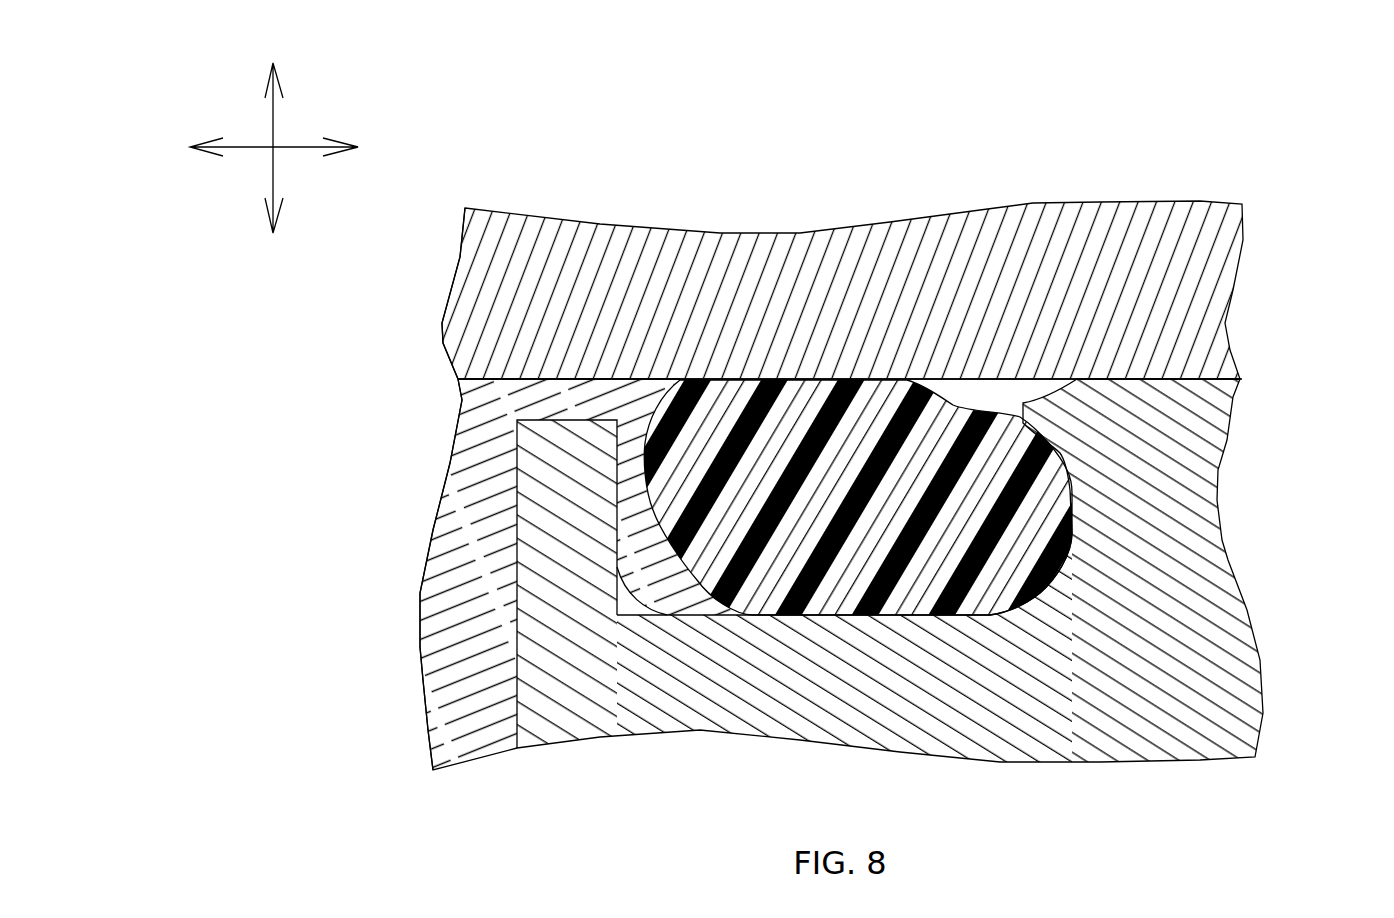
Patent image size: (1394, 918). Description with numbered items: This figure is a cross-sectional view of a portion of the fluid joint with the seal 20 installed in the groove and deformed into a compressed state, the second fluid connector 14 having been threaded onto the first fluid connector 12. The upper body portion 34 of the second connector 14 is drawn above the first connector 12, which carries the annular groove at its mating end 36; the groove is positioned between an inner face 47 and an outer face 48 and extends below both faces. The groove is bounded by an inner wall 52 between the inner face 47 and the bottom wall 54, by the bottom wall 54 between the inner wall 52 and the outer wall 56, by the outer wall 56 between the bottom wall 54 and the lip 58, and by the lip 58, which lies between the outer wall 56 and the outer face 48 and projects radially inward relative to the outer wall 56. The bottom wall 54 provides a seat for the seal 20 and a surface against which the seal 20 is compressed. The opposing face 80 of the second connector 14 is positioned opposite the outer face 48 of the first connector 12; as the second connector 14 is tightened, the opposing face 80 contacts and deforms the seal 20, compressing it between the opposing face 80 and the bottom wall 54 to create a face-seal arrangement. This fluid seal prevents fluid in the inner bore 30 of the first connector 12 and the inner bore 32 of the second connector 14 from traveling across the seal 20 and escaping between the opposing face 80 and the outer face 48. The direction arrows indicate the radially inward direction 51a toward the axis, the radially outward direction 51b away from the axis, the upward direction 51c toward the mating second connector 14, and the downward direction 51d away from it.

The first fluid connector 12 is at (820, 560).
The second fluid connector 14 is at (837, 265).
The seal 20 is at (697, 428).
The inner bore 30 is at (351, 605).
The inner bore 32 is at (403, 296).
The upper body portion 34 is at (852, 280).
The mating end 36 is at (1107, 725).
The inner face 47 is at (589, 419).
The outer face 48 is at (1180, 379).
The radially inward direction 51a is at (240, 147).
The radially outward direction 51b is at (300, 147).
The upward direction 51c is at (274, 113).
The downward direction 51d is at (273, 175).
The inner wall 52 is at (613, 503).
The bottom wall 54 is at (703, 617).
The outer wall 56 is at (1073, 548).
The lip 58 is at (1075, 385).
The opposing face 80 is at (628, 379).